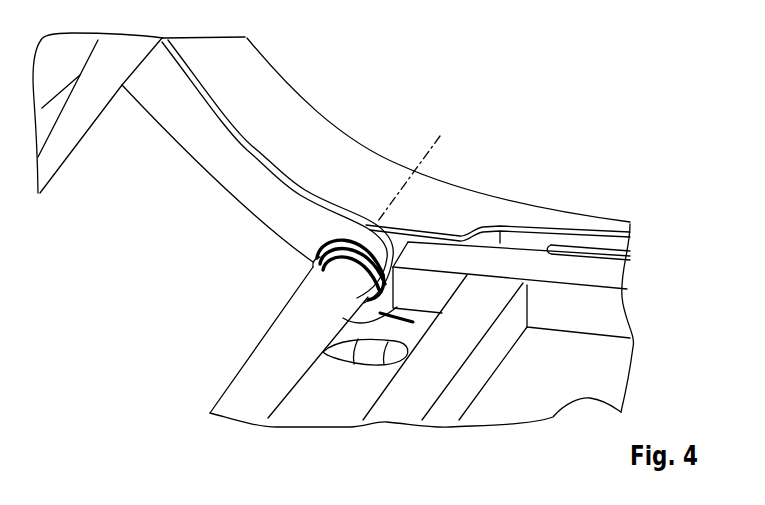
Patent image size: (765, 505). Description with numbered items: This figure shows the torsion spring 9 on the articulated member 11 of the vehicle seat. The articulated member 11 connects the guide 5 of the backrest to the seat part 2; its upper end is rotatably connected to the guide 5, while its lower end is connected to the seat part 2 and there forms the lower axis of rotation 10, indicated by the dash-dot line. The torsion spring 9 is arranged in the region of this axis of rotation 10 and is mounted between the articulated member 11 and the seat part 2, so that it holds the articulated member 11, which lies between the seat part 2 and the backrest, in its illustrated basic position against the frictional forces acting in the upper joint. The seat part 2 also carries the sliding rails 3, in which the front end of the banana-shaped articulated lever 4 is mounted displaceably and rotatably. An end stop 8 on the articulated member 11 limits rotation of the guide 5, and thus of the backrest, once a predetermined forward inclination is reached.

The seat part 2 is at (600, 272).
The sliding rails 3 is at (583, 236).
The articulated lever 4 is at (318, 148).
The guide 5 is at (89, 99).
The end stop 8 is at (146, 68).
The torsion spring 9 is at (300, 266).
The axis of rotation 10 is at (425, 166).
The articulated member 11 is at (222, 165).